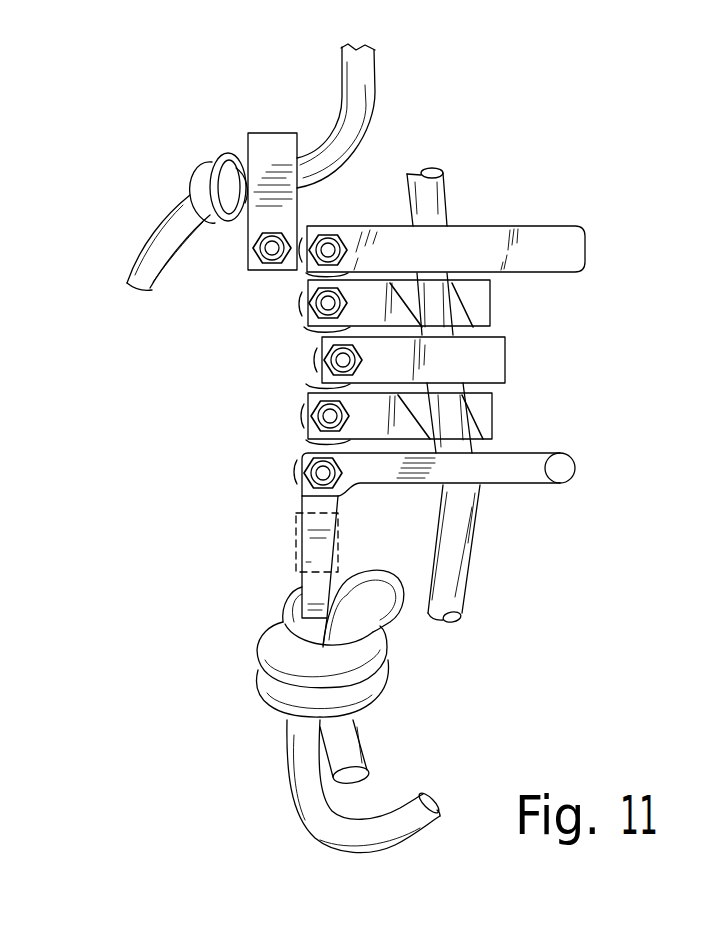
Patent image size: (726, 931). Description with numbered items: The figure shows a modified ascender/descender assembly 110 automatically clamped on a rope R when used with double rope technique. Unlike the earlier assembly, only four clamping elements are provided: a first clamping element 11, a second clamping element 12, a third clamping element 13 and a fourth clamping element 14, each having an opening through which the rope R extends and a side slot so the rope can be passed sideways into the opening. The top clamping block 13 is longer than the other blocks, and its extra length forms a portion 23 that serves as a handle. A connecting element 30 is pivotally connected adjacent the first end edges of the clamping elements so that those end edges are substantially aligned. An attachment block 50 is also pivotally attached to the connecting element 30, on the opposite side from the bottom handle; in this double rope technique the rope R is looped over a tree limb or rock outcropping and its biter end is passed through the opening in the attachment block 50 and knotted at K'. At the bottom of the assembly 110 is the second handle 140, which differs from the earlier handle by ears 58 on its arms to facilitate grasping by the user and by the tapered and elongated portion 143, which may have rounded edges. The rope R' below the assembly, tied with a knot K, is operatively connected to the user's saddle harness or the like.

The ascender/descender assembly 110 is at (498, 296).
The attachment block 50 is at (273, 148).
The third clamping element 13 is at (388, 249).
The handle portion 23 is at (578, 218).
The fourth clamping element 14 is at (483, 298).
The second clamping element 12 is at (475, 357).
The first clamping element 11 is at (475, 415).
The ears 58 is at (565, 472).
The connecting element 30 is at (401, 524).
The second handle 140 is at (397, 490).
The tapered portion 143 is at (313, 512).
The rope R is at (315, 333).
The rope R' is at (333, 786).
The knot K is at (362, 643).
The knot K' is at (177, 150).